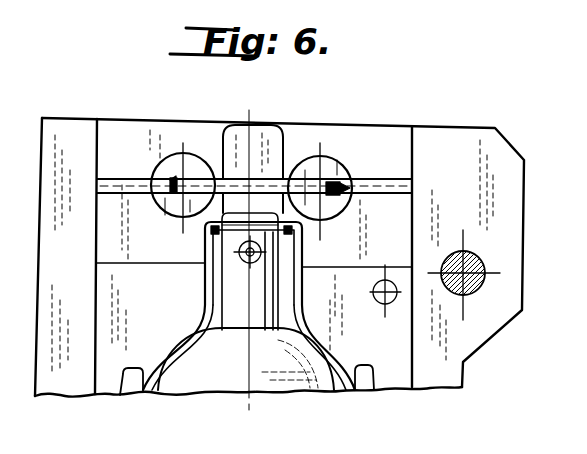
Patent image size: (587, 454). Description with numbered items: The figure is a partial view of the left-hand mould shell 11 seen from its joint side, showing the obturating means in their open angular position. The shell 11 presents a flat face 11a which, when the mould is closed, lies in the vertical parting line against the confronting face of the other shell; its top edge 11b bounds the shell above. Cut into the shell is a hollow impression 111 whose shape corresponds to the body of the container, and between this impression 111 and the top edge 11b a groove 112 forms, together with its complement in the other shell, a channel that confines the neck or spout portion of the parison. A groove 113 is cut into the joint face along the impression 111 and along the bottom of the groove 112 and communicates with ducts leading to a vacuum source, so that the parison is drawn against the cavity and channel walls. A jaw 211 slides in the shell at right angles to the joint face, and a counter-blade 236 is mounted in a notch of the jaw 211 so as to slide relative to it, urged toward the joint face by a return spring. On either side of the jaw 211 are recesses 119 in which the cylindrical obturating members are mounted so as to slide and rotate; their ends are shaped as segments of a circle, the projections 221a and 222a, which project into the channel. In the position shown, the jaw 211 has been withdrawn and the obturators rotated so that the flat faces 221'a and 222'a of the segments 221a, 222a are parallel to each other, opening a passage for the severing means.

The shell 11 is at (384, 103).
The flat face 11a is at (298, 257).
The top edge 11b is at (134, 118).
The hollow impression 111 is at (249, 347).
The groove 112 is at (232, 285).
The groove 113 is at (124, 372).
The recess 119 is at (208, 166).
The jaw 211 is at (265, 175).
The projection 221a is at (337, 163).
The flat face 221'a is at (395, 150).
The projection 222a is at (167, 212).
The flat face 222'a is at (140, 169).
The counter-blade 236 is at (232, 188).